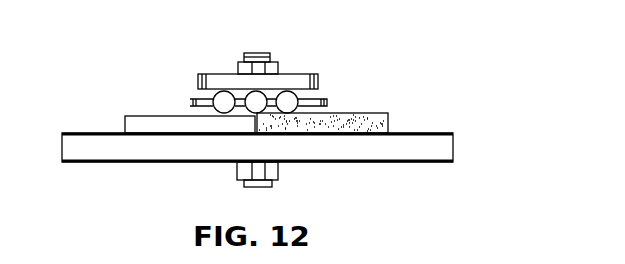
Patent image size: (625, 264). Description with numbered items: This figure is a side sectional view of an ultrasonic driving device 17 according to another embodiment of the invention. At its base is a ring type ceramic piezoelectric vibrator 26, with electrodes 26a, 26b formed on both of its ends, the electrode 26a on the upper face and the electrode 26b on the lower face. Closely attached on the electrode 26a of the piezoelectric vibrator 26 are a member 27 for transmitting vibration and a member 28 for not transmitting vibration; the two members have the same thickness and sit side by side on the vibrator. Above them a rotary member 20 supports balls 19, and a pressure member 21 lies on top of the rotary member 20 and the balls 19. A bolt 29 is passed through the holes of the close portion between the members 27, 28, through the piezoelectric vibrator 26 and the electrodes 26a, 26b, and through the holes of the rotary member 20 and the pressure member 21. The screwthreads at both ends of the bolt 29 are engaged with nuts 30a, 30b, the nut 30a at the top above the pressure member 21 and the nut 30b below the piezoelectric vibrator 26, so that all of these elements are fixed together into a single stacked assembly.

The mounting assembly 17 is at (382, 170).
The balls 19 is at (212, 98).
The rotary member 20 is at (327, 112).
The pressure member 21 is at (213, 82).
The piezoelectric vibrator 26 is at (445, 150).
The electrode 26a is at (413, 133).
The electrode 26b is at (188, 165).
The member for transmitting vibration 27 is at (132, 117).
The member for not transmitting vibration 28 is at (353, 113).
The bolt 29 is at (267, 55).
The nut 30a is at (248, 54).
The nut 30b is at (278, 170).